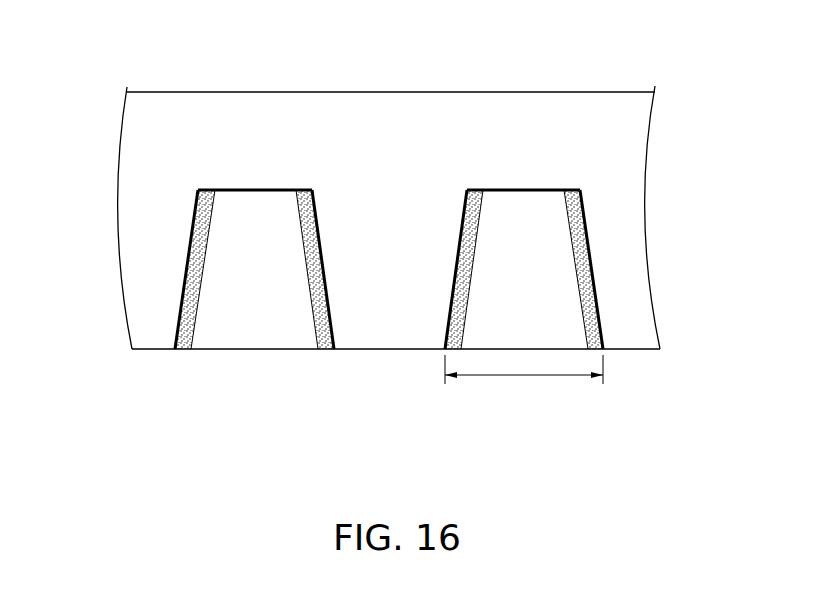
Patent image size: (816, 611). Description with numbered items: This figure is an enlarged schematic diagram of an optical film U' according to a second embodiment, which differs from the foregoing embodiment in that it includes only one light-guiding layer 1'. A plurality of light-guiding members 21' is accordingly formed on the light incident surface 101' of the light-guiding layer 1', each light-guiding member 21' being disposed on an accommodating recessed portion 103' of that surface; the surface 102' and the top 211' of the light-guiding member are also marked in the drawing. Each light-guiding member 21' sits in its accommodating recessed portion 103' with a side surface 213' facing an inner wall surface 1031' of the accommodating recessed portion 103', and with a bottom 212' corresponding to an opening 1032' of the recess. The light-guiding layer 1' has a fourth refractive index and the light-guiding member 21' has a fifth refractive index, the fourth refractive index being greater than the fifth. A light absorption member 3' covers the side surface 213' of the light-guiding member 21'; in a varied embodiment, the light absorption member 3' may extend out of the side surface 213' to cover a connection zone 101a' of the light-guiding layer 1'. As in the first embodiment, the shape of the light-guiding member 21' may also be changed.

The optical film U' is at (399, 225).
The light-guiding layer 1' is at (399, 227).
The light incident surface 101' is at (427, 221).
The top surface of substrate 102' is at (409, 68).
The connection zone 101a' is at (415, 199).
The light-guiding member 21' is at (332, 236).
The top surface of fin 211' is at (255, 121).
The bottom 212' is at (219, 382).
The side surface 213' is at (355, 291).
The light absorption member 3' is at (138, 269).
The accommodating recessed portion 103' is at (287, 218).
The inner wall surface 1031' is at (287, 288).
The opening 1032' is at (524, 375).